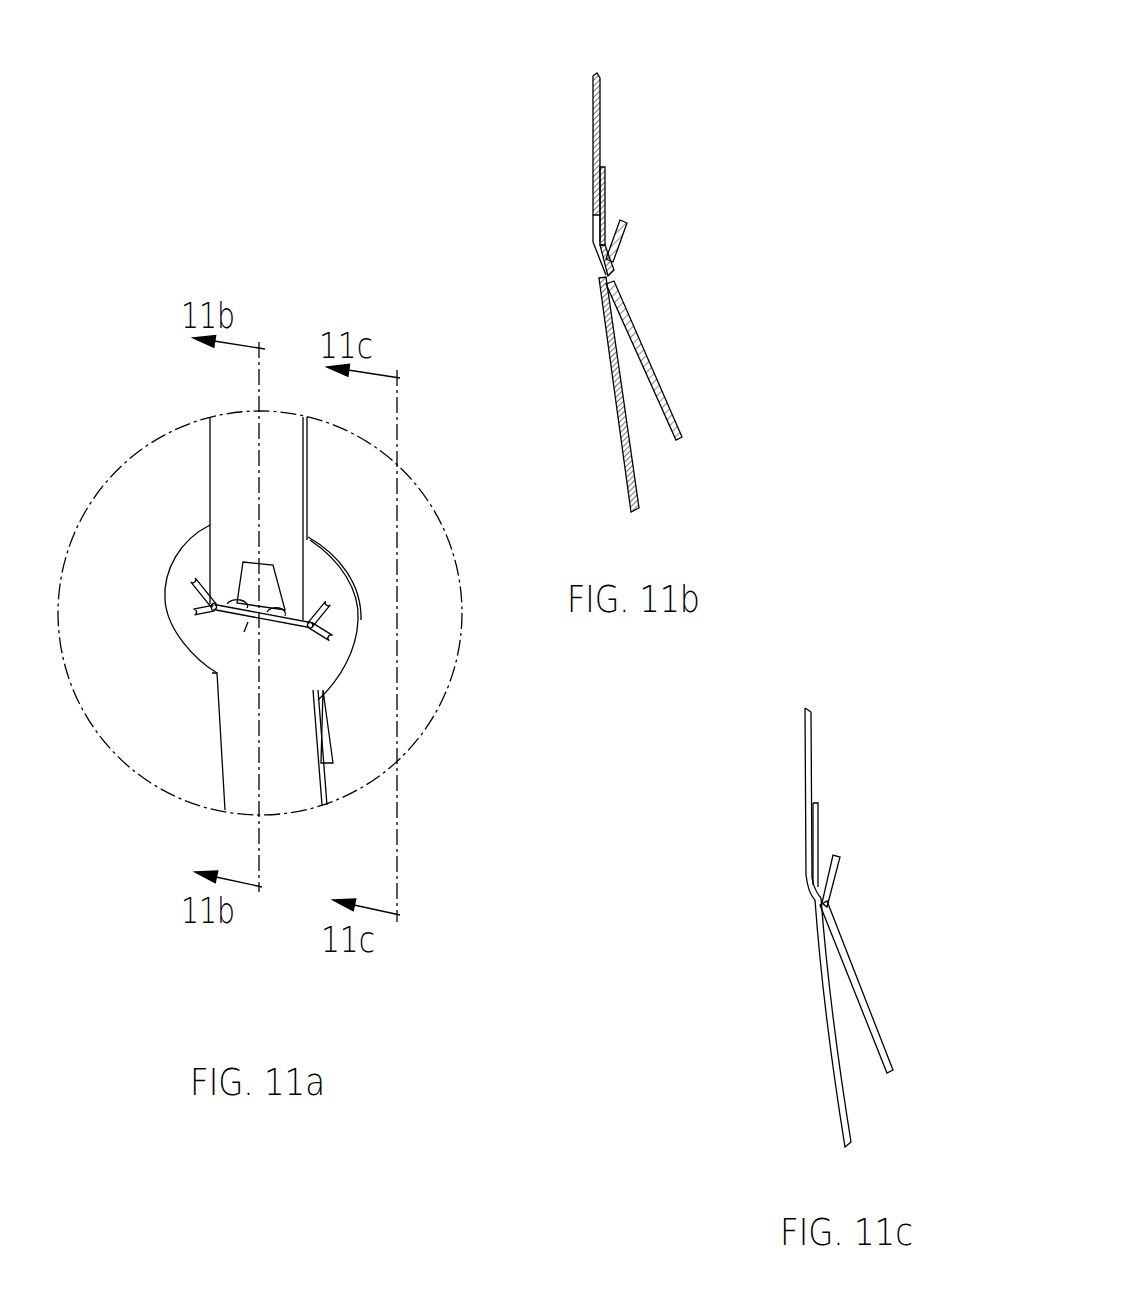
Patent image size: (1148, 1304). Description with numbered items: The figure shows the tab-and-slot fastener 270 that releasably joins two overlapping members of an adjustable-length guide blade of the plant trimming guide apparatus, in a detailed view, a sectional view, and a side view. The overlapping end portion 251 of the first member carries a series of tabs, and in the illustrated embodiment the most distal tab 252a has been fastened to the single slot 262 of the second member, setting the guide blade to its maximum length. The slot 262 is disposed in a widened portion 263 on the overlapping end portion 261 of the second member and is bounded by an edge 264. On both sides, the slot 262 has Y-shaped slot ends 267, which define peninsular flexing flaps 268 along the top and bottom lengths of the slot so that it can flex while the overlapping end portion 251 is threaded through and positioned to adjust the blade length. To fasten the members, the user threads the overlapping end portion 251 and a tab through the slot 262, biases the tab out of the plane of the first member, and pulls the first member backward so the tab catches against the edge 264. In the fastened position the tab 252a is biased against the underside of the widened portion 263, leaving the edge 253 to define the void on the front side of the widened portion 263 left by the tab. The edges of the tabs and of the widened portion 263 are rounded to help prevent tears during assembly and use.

In FIG. 11A, the overlapping end portion of first member 251 is at (327, 742).
In FIG. 11B, the overlapping end portion of first member 251 is at (658, 373).
In FIG. 11C, the overlapping end portion of first member 251 is at (875, 1017).
In FIG. 11B, the most distal tab 252a is at (628, 232).
In FIG. 11C, the most distal tab 252a is at (835, 873).
In FIG. 11A, the edge 253 is at (280, 583).
In FIG. 11B, the edge 253 is at (597, 232).
In FIG. 11C, the edge 253 is at (813, 804).
In FIG. 11A, the overlapping end portion of second member 261 is at (283, 672).
In FIG. 11B, the overlapping end portion of second member 261 is at (605, 333).
In FIG. 11C, the overlapping end portion of second member 261 is at (818, 968).
In FIG. 11A, the slot 262 is at (308, 645).
In FIG. 11B, the slot 262 is at (592, 267).
In FIG. 11C, the slot 262 is at (803, 900).
In FIG. 11A, the widened portion 263 is at (172, 606).
In FIG. 11B, the edge defining the slot 264 is at (609, 247).
In FIG. 11C, the edge defining the slot 264 is at (820, 862).
In FIG. 11A, the Y-shaped slot ends 267 is at (192, 585).
In FIG. 11A, the peninsular flexing flaps 268 is at (248, 622).
In FIG. 11A, the tab-and-slot fastener 270 is at (178, 498).
In FIG. 11B, the tab-and-slot fastener 270 is at (690, 270).
In FIG. 11C, the tab-and-slot fastener 270 is at (727, 963).